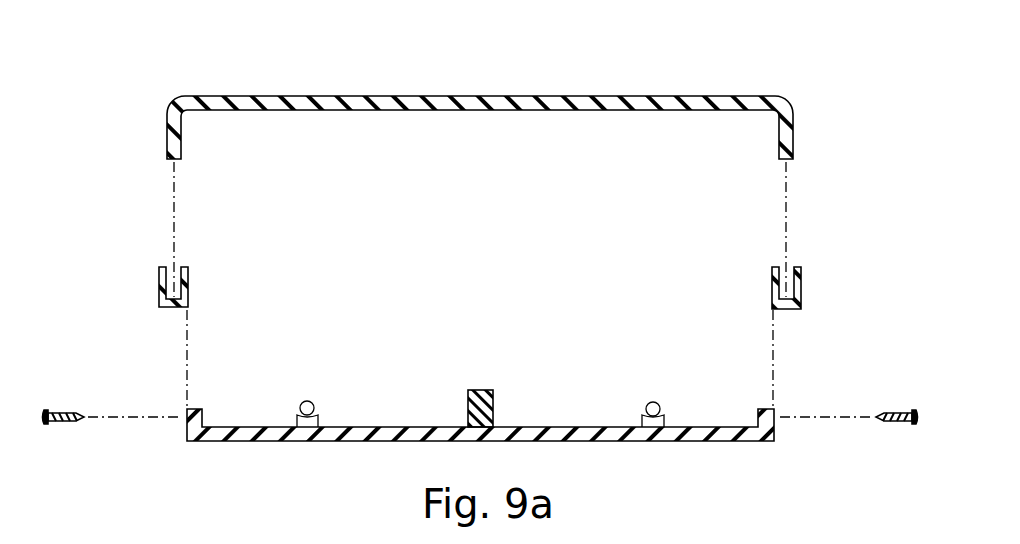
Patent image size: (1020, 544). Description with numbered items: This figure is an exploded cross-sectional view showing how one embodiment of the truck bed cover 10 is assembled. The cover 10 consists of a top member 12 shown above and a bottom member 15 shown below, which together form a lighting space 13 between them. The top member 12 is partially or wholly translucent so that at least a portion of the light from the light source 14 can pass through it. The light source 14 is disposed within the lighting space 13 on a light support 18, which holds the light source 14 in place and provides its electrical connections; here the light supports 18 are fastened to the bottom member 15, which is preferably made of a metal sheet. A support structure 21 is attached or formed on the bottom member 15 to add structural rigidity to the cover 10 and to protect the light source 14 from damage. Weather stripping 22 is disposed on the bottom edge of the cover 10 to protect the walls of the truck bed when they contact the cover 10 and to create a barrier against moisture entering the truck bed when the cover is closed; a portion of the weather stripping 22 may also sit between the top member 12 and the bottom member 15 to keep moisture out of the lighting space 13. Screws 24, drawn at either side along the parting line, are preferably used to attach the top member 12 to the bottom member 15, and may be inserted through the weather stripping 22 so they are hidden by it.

The truck bed cover 10 is at (399, 66).
The top member 12 is at (265, 95).
The lighting space 13 is at (486, 464).
The light source 14 is at (303, 401).
The bottom member 15 is at (242, 441).
The light support 18 is at (320, 418).
The support structure 21 is at (475, 390).
The weather stripping 22 is at (159, 283).
The screw 24 is at (58, 425).